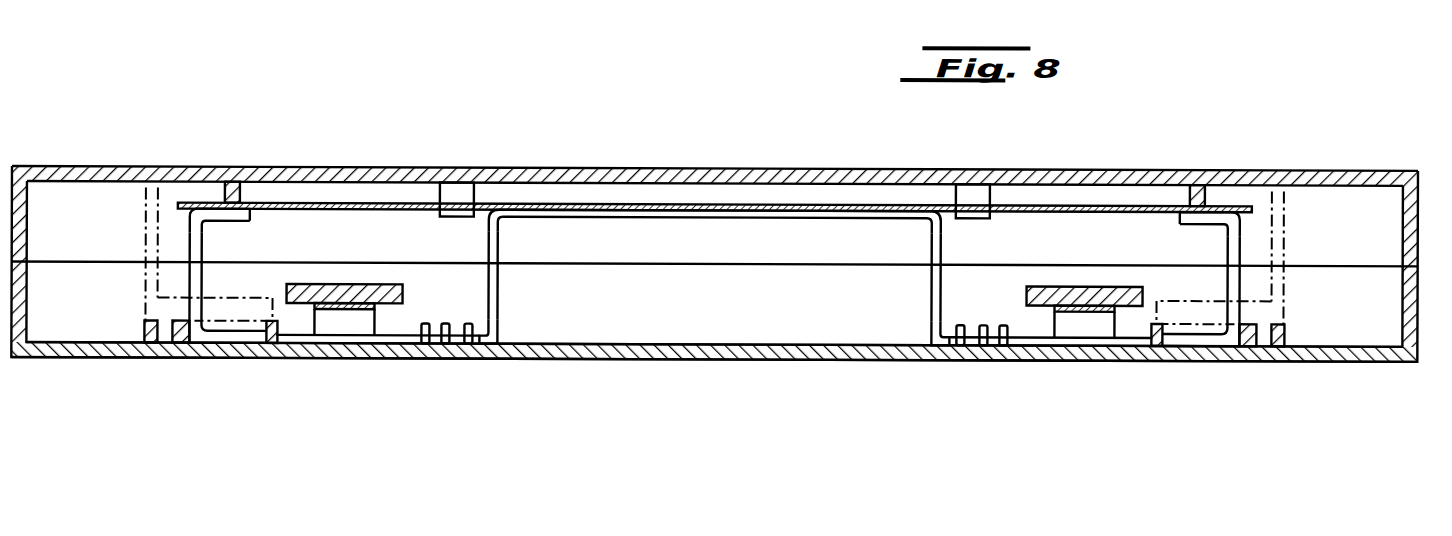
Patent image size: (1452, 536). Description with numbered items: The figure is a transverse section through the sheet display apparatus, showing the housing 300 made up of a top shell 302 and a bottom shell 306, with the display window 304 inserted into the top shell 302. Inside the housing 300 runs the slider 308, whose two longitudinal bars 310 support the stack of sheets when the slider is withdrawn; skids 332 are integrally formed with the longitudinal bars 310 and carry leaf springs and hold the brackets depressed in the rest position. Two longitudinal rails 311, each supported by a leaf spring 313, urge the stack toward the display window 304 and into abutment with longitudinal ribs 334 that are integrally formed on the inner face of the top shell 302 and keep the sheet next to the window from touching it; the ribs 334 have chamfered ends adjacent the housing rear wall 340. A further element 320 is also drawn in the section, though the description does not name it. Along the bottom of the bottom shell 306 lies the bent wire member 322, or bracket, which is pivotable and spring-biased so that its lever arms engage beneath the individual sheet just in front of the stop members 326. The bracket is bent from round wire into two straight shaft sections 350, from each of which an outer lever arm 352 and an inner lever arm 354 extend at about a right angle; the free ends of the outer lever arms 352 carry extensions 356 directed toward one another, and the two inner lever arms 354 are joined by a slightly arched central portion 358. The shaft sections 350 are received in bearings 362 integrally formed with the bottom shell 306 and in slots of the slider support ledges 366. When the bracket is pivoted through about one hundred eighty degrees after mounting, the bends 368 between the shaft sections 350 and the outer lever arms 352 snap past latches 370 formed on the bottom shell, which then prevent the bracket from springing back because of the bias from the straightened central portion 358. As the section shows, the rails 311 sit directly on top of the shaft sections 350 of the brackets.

The housing 300 is at (1353, 171).
The top shell 302 is at (1285, 167).
The display window 304 is at (838, 178).
The bottom shell 306 is at (1358, 358).
The slider 308 is at (1288, 285).
The longitudinal bars 310 is at (152, 207).
The longitudinal rails 311 is at (348, 293).
The leaf spring 313 is at (342, 309).
The mounting plate 320 is at (332, 200).
The bent wire member 322 is at (501, 285).
The stop members 326 is at (463, 186).
The skids 332 is at (240, 297).
The longitudinal ribs 334 is at (243, 197).
The housing rear wall 340 is at (797, 300).
The shaft sections 350 is at (403, 338).
The outer lever arm 352 is at (195, 278).
The inner lever arm 354 is at (492, 243).
The extensions 356 is at (208, 208).
The central portion 358 is at (710, 216).
The bearings 362 is at (469, 321).
The slider support ledges 366 is at (278, 355).
The bends 368 is at (187, 353).
The latches 370 is at (163, 352).